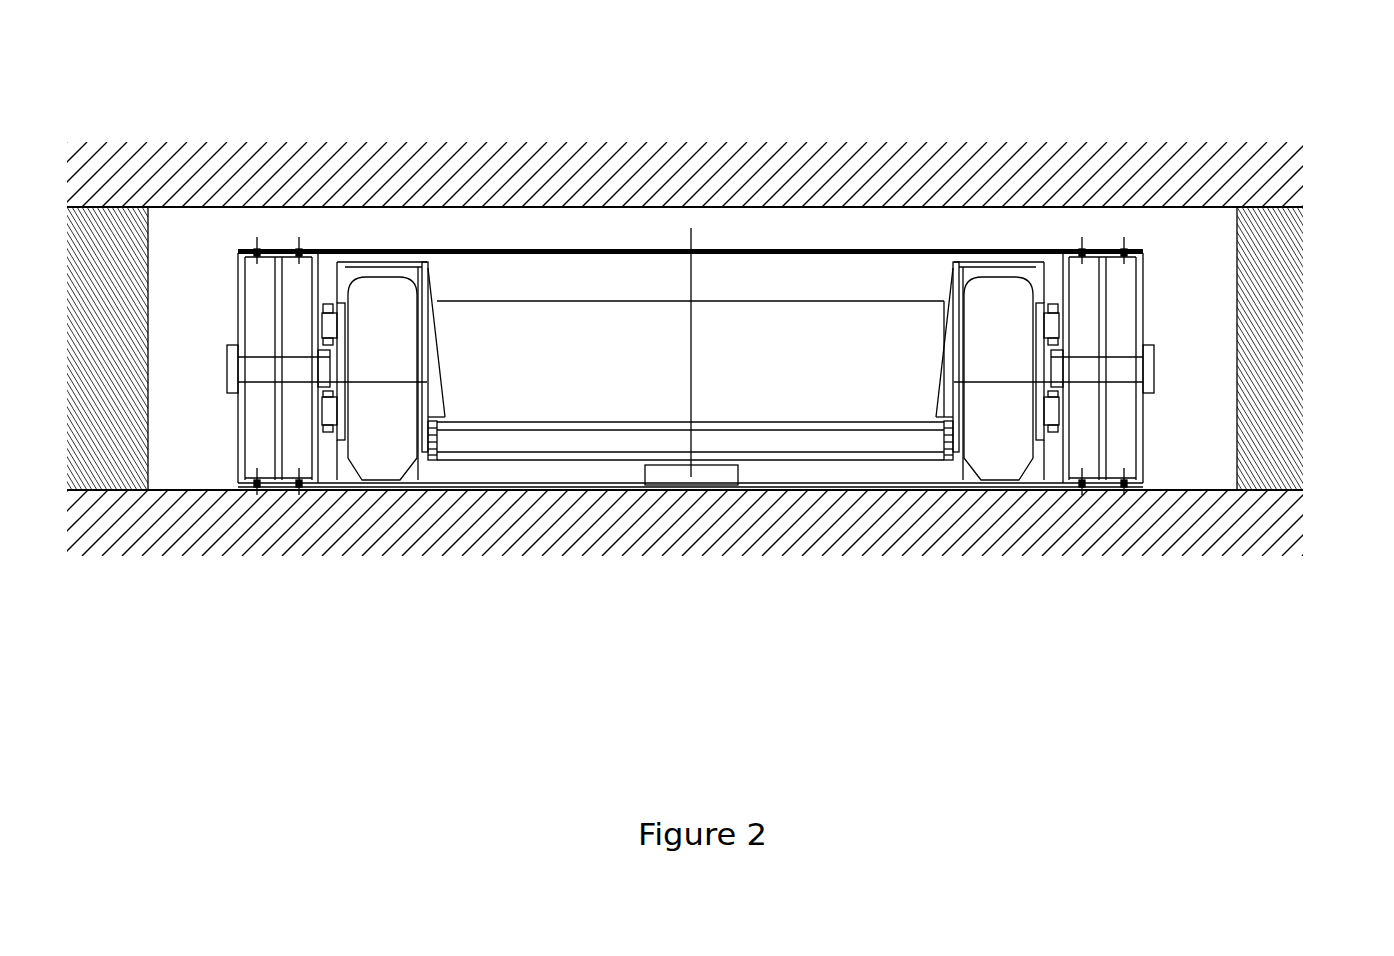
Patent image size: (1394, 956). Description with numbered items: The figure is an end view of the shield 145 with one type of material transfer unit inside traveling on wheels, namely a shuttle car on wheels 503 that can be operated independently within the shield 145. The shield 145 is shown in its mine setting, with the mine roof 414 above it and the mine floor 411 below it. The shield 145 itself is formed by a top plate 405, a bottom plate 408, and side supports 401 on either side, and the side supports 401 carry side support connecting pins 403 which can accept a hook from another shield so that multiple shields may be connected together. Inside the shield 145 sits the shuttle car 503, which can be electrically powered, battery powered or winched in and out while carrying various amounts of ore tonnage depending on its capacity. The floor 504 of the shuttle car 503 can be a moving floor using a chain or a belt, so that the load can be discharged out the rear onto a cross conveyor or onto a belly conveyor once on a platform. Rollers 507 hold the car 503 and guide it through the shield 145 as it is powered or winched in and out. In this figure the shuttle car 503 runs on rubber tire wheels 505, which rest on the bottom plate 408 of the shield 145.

The shield 145 is at (218, 253).
The side supports 401 is at (1145, 422).
The side support connecting pins 403 is at (1123, 370).
The top plate 405 is at (893, 248).
The bottom plate 408 is at (818, 488).
The mine floor 411 is at (1222, 487).
The mine roof 414 is at (1175, 207).
The shuttle car on wheels 503 is at (432, 367).
The floor of the shuttle car 504 is at (618, 445).
The rubber tire wheels 505 is at (390, 463).
The rollers 507 is at (327, 322).